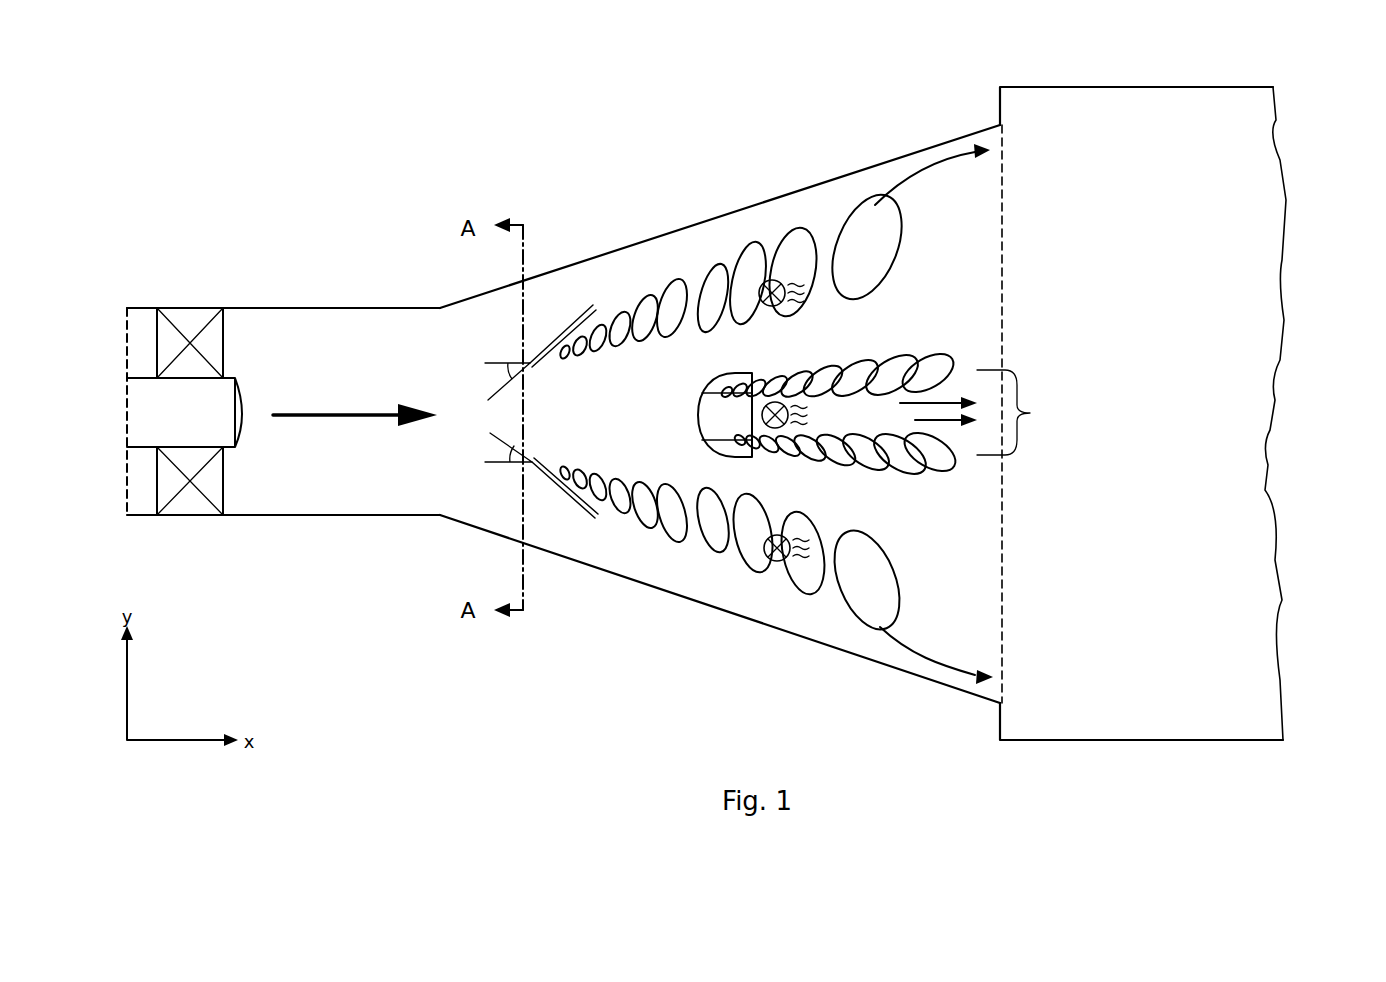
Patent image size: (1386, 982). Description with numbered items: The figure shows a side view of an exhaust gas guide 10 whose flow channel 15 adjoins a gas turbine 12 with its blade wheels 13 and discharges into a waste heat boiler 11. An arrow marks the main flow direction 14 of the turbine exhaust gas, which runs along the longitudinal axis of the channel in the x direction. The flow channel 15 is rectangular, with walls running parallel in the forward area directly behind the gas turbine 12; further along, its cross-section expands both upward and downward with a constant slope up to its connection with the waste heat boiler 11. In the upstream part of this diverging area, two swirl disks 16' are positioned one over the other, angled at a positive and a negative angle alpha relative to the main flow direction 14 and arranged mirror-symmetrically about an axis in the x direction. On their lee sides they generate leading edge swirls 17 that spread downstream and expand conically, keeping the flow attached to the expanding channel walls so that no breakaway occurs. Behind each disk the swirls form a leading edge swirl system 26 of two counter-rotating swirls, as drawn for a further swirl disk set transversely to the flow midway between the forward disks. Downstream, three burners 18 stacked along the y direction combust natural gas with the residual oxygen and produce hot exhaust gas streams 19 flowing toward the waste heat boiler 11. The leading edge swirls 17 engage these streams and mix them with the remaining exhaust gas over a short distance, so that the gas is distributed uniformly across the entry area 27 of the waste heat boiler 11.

The exhaust gas guide 10 is at (597, 230).
The waste heat boiler 11 is at (1060, 697).
The gas turbine 12 is at (238, 370).
The blade wheels 13 is at (217, 495).
The main flow direction 14 is at (335, 415).
The flow channel 15 is at (397, 495).
The swirl disks 16' is at (564, 364).
The leading edge swirls 17 is at (845, 195).
The burners 18 is at (770, 280).
The hot exhaust gas streams 19 is at (802, 560).
The leading edge swirl system 26 is at (1030, 413).
The entry area 27 is at (1003, 272).